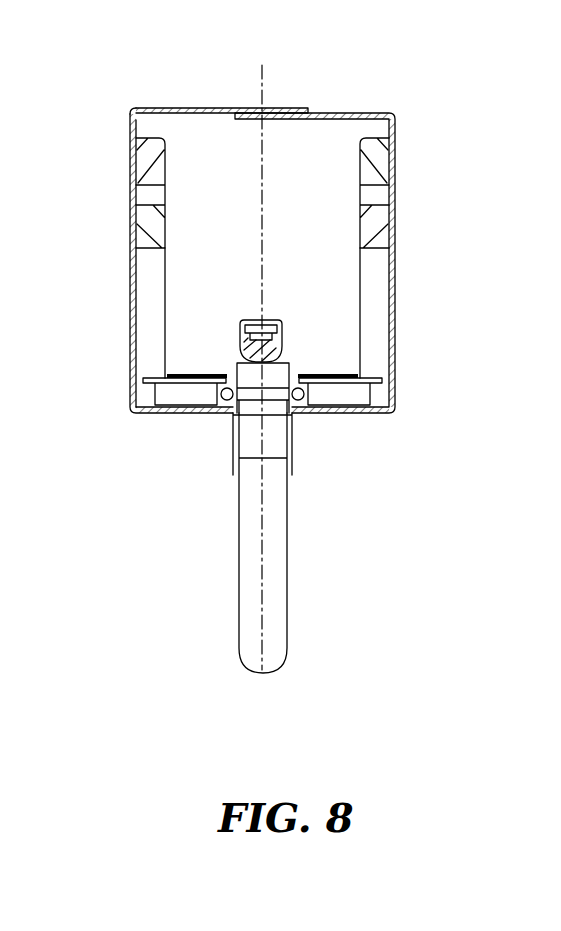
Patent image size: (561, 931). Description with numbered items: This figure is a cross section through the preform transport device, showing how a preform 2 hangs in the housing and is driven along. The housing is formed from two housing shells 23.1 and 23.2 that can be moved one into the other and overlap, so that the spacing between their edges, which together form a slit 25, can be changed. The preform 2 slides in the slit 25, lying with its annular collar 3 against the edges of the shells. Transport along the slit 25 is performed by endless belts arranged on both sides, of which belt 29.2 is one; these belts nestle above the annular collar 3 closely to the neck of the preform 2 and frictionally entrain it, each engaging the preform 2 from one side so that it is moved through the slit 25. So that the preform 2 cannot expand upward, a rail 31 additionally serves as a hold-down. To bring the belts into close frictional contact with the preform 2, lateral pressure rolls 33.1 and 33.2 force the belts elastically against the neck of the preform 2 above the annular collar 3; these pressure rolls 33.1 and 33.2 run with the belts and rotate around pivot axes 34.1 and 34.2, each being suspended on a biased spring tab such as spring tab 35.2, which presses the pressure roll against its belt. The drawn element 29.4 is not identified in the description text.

The preform 2 is at (294, 594).
The annular collar 3 is at (285, 445).
The housing shell 23.1 is at (193, 107).
The housing shell 23.2 is at (350, 113).
The slit 25 is at (235, 420).
The endless belt 29.2 is at (299, 400).
The roller 29.4 is at (227, 400).
The rail 31 is at (248, 312).
The pressure roll 33.1 is at (168, 398).
The pressure roll 33.2 is at (345, 400).
The pivot axis 34.1 is at (188, 397).
The pivot axis 34.2 is at (348, 383).
The spring tab 35.2 is at (166, 308).